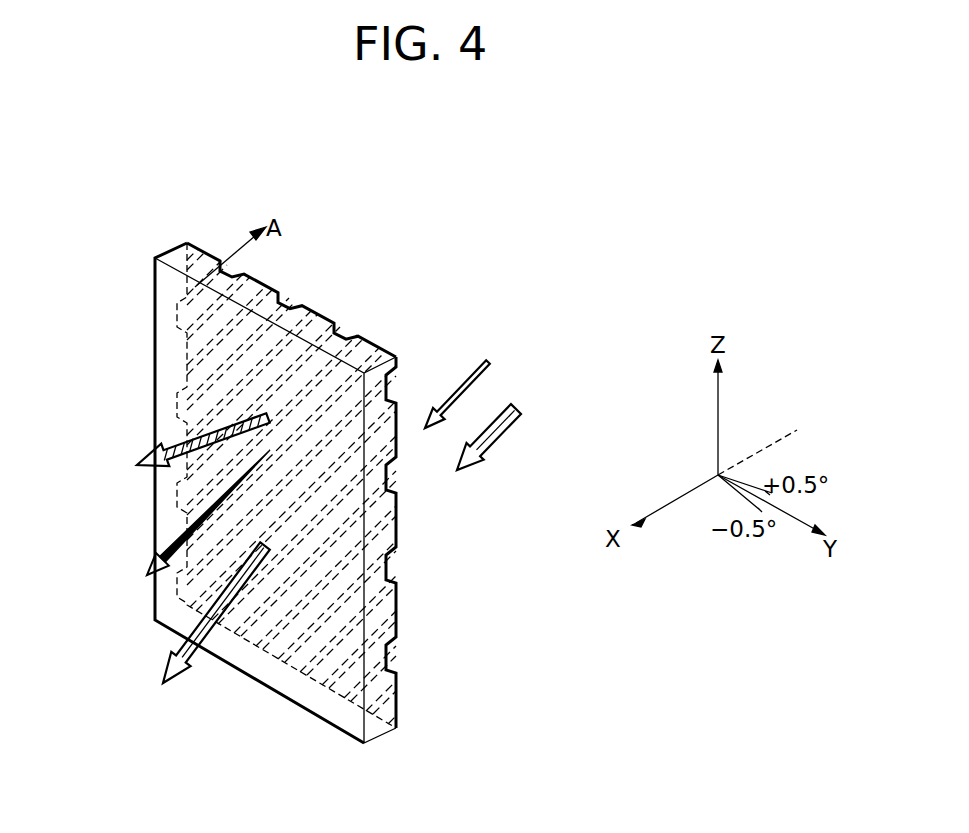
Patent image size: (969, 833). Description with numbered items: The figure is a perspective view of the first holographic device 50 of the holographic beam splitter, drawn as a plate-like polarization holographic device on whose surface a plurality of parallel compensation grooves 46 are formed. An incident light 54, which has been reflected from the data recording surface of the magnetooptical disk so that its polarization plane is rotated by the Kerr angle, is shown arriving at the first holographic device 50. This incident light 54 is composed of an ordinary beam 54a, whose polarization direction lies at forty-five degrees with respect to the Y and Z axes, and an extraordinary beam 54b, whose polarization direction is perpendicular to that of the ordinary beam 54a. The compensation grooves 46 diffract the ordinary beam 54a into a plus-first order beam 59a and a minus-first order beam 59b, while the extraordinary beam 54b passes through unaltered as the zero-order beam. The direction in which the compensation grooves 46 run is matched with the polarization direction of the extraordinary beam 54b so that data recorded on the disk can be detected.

The compensation grooves 46 is at (343, 335).
The first holographic device 50 is at (378, 727).
The incident light 54 is at (602, 328).
The ordinary beam 54a is at (517, 403).
The extraordinary beam 54b is at (475, 367).
The +1st order beam 59a is at (137, 459).
The −1st order beam 59b is at (173, 648).